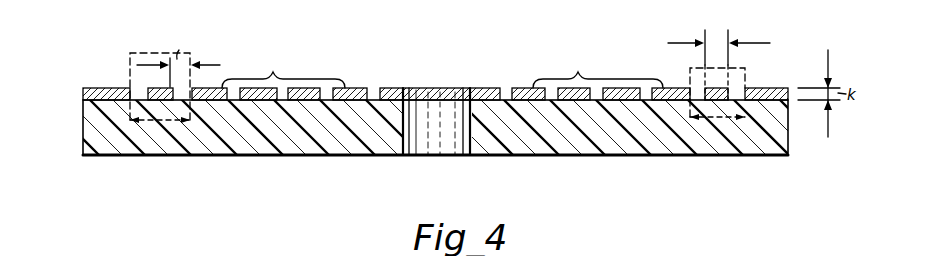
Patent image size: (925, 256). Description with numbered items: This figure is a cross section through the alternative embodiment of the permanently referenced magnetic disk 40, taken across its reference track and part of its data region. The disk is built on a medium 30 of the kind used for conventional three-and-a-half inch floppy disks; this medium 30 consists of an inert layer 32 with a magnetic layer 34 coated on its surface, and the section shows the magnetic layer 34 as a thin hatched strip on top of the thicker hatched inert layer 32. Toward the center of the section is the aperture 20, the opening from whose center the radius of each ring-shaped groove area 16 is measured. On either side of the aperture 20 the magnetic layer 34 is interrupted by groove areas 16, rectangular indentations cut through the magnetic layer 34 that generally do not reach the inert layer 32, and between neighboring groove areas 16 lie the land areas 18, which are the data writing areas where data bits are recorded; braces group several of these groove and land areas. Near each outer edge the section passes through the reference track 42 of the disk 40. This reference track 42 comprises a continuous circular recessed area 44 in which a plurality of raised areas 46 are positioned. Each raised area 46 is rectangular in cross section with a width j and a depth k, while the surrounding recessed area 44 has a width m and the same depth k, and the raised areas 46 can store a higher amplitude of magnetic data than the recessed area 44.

The groove area 16 is at (234, 101).
The land area 18 is at (273, 72).
The aperture 20 is at (428, 156).
The medium 30 is at (97, 157).
The inert layer 32 is at (84, 128).
The magnetic layer 34 is at (83, 97).
The permanently referenced magnetic disk 40 is at (250, 160).
The reference track 42 is at (132, 53).
The recessed area 44 is at (437, 128).
The raised area 46 is at (148, 88).